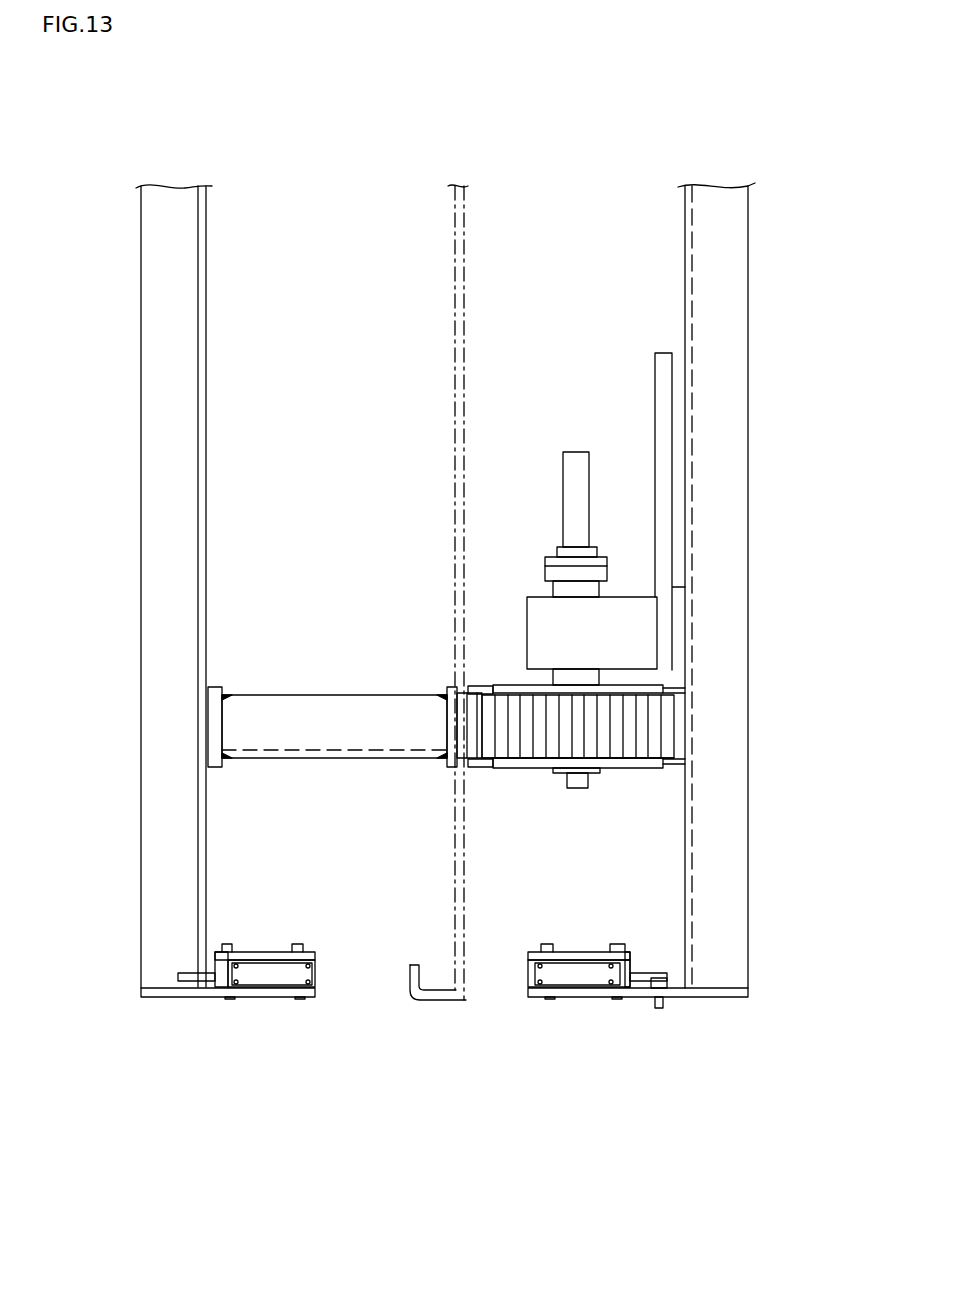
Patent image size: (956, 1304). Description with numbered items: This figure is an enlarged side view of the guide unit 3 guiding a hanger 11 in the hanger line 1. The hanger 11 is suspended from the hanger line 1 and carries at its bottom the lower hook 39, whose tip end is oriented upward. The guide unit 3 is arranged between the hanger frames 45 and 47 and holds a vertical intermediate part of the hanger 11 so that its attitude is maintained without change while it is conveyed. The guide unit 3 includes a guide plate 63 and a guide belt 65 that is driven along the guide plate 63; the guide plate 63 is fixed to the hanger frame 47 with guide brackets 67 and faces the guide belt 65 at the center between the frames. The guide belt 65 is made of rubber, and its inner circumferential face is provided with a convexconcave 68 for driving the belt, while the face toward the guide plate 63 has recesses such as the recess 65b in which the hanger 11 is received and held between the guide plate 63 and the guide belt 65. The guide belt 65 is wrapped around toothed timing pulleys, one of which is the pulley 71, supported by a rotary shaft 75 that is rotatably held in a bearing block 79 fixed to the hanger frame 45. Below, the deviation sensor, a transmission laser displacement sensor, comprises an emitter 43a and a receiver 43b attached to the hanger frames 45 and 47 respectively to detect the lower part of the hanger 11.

The hanger line 1 is at (708, 128).
The guide unit 3 is at (555, 808).
The hanger 11 is at (466, 367).
The lower hook 39 is at (430, 1000).
The emitter 43a is at (580, 978).
The receiver 43b is at (265, 978).
The hanger frame 45 is at (738, 642).
The hanger frame 47 is at (153, 603).
The guide plate 63 is at (450, 688).
The guide belt 65 is at (650, 715).
The recess 65b is at (528, 745).
The guide bracket 67 is at (319, 720).
The convexconcave 68 is at (628, 732).
The toothed timing pulley 71 is at (618, 770).
The rotary shaft 75 is at (580, 470).
The bearing block 79 is at (632, 632).